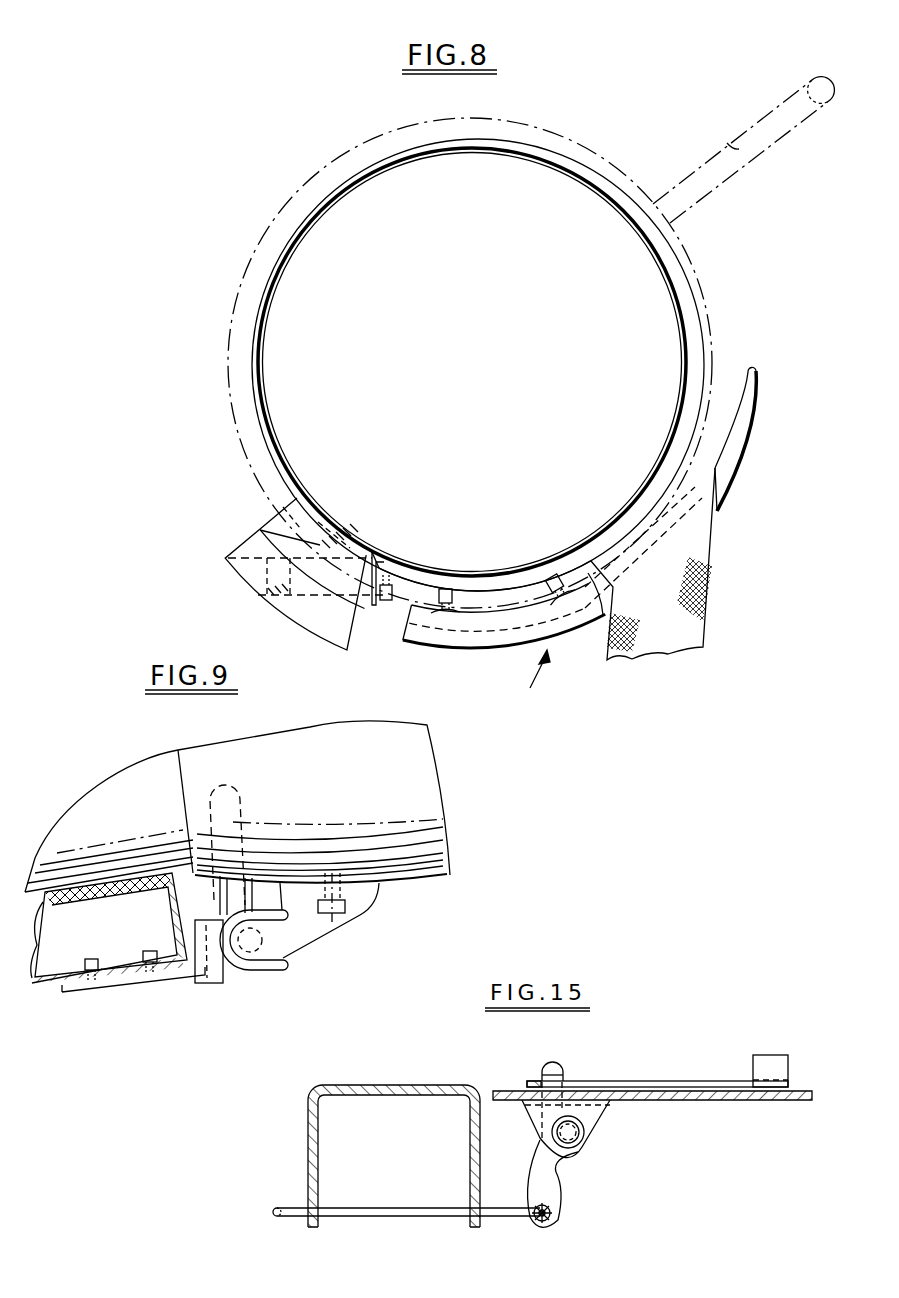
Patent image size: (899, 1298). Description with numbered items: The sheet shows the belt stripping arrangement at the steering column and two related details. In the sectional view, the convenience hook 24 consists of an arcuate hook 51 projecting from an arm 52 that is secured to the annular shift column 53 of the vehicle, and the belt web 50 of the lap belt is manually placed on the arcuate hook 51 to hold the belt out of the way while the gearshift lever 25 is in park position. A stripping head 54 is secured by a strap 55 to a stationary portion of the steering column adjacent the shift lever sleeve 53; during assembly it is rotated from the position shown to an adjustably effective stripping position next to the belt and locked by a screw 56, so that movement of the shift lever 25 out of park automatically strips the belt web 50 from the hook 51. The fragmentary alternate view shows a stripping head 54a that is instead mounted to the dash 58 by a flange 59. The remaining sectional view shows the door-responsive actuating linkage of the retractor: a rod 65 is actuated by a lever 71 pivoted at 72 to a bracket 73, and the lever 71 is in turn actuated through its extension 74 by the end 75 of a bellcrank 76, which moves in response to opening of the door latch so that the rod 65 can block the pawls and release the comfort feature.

In FIG. 8, the convenience hook 24 is at (531, 686).
In FIG. 8, the gearshift lever 25 is at (743, 150).
In FIG. 8, the belt web 50 is at (700, 627).
In FIG. 8, the arcuate hook 51 is at (735, 463).
In FIG. 8, the arm 52 is at (467, 642).
In FIG. 9, the arm 52 is at (303, 930).
In FIG. 8, the annular shift column 53 is at (497, 592).
In FIG. 8, the stripping head 54 is at (332, 637).
In FIG. 9, the stripping head 54a is at (233, 973).
In FIG. 8, the strap 55 is at (254, 403).
In FIG. 8, the screw 56 is at (340, 578).
In FIG. 9, the dash 58 is at (38, 988).
In FIG. 9, the flange 59 is at (128, 987).
In FIG. 15, the rod 65 is at (411, 1212).
In FIG. 15, the lever 71 is at (540, 1173).
In FIG. 15, the pivot 72 is at (572, 1135).
In FIG. 15, the bracket 73 is at (600, 1113).
In FIG. 15, the extension 74 is at (542, 1064).
In FIG. 15, the end 75 is at (578, 1081).
In FIG. 15, the bellcrank 76 is at (683, 1069).